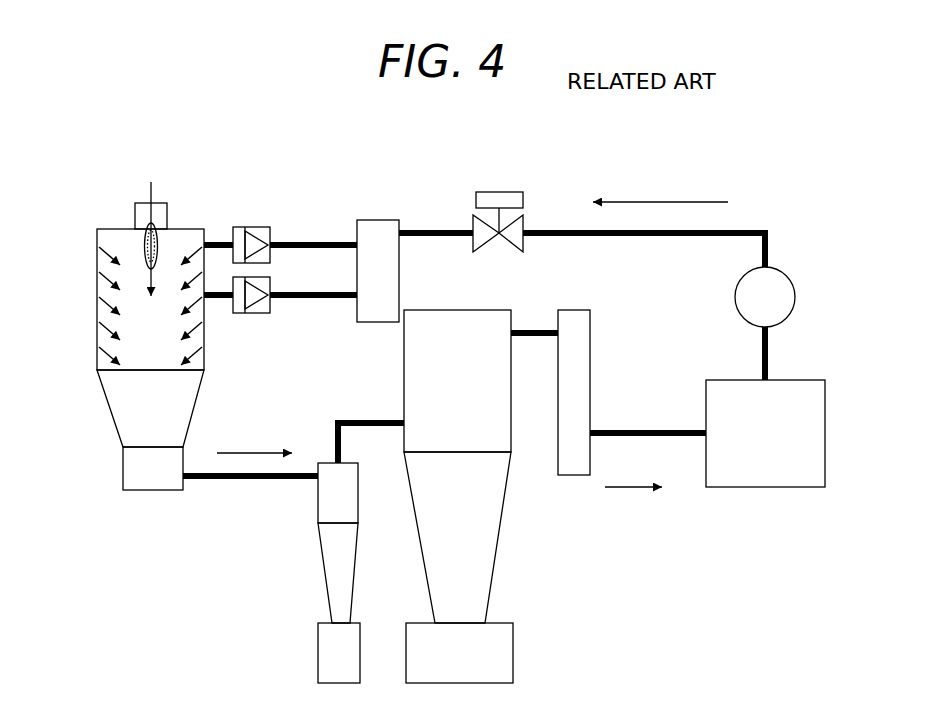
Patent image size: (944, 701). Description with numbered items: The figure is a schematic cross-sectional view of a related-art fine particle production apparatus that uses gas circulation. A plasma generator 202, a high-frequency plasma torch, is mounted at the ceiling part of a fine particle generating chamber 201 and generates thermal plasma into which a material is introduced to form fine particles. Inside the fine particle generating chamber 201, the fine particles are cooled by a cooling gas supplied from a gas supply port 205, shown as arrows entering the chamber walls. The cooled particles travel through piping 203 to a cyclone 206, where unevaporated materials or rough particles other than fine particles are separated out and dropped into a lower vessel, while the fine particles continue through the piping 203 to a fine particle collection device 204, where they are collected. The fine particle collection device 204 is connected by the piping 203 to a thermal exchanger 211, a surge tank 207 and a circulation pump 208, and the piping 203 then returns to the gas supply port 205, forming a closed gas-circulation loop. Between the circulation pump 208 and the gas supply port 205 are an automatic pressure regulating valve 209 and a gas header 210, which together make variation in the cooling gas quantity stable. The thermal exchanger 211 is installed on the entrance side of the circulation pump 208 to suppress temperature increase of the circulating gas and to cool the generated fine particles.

The fine particle generating chamber 201 is at (112, 230).
The plasma generator 202 is at (158, 218).
The piping 203 is at (310, 293).
The fine particle collection device 204 is at (458, 496).
The gas supply port 205 is at (98, 270).
The cyclone 206 is at (330, 495).
The surge tank 207 is at (765, 433).
The circulation pump 208 is at (788, 278).
The automatic pressure regulating valve 209 is at (500, 192).
The gas header 210 is at (378, 220).
The thermal exchanger 211 is at (573, 475).